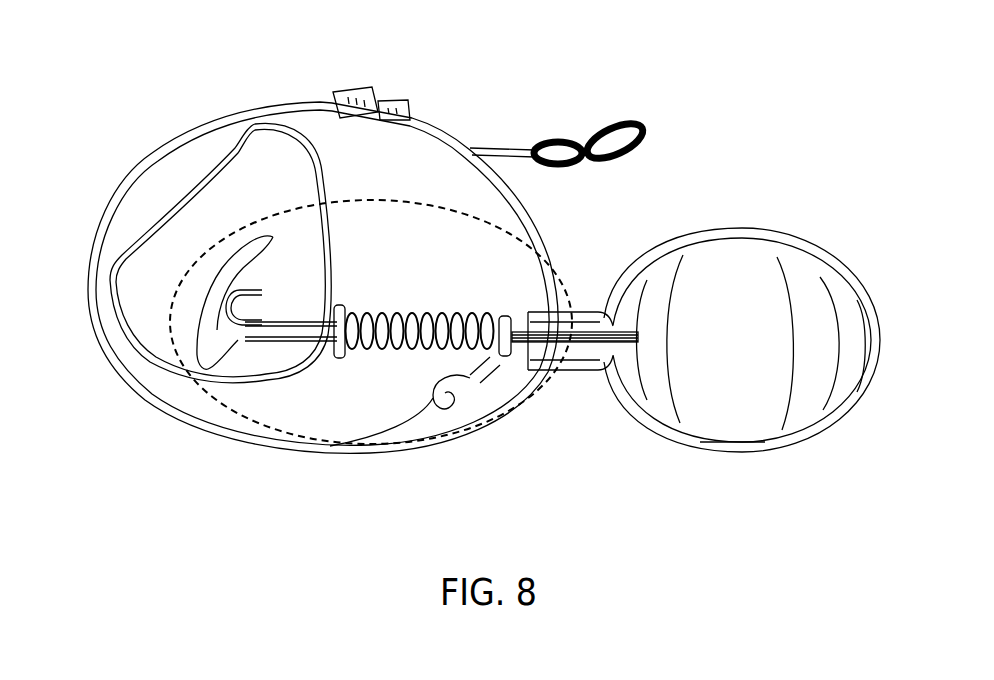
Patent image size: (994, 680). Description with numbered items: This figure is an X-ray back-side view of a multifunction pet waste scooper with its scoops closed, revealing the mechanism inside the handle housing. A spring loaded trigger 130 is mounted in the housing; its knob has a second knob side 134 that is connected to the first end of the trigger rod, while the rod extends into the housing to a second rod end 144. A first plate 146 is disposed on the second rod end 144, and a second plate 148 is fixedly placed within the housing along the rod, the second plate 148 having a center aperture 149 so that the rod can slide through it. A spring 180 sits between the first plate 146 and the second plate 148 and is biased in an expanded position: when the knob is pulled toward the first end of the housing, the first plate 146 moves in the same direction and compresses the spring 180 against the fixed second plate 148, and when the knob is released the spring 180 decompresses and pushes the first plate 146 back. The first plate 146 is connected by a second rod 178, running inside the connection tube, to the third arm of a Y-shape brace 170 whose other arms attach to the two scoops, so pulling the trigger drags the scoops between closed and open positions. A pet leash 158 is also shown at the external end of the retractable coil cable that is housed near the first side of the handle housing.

The spring loaded trigger 130 is at (168, 323).
The second knob side 134 is at (255, 292).
The second rod end 144 is at (483, 330).
The first plate 146 is at (498, 340).
The second plate 148 is at (342, 355).
The center aperture 149 is at (340, 332).
The pet leash 158 is at (596, 150).
The Y-shape brace 170 is at (607, 343).
The second rod 178 is at (548, 336).
The spring 180 is at (422, 322).